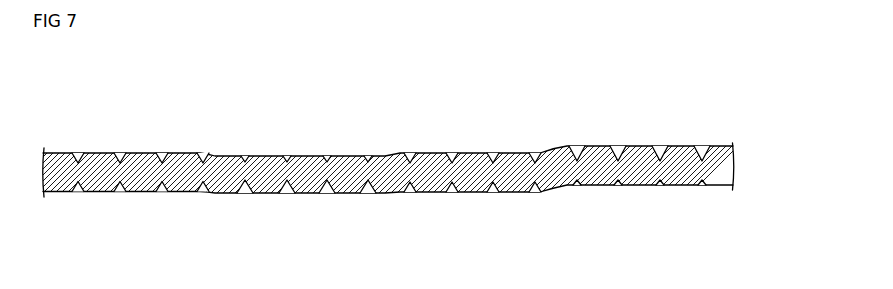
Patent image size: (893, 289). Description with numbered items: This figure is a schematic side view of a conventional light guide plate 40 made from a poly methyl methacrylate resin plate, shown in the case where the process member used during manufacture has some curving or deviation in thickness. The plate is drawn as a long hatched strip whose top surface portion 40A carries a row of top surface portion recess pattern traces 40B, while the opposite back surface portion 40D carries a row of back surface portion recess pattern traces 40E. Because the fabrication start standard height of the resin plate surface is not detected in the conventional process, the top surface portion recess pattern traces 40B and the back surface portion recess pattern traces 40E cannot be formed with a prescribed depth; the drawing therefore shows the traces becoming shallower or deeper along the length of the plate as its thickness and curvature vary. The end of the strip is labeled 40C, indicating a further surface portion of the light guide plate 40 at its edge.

The conventional light guide plate 40 is at (616, 114).
The top surface portion 40A is at (303, 155).
The top surface portion recess pattern traces 40B is at (366, 155).
The end face 40C is at (735, 165).
The back surface portion 40D is at (475, 193).
The back surface portion recess pattern traces 40E is at (537, 192).